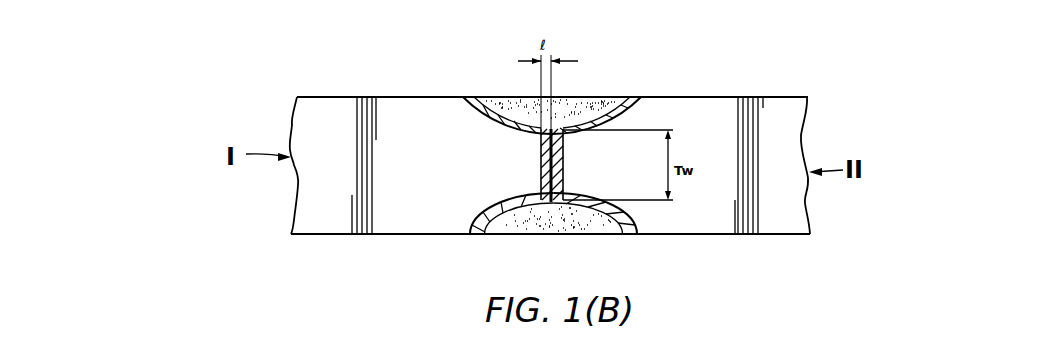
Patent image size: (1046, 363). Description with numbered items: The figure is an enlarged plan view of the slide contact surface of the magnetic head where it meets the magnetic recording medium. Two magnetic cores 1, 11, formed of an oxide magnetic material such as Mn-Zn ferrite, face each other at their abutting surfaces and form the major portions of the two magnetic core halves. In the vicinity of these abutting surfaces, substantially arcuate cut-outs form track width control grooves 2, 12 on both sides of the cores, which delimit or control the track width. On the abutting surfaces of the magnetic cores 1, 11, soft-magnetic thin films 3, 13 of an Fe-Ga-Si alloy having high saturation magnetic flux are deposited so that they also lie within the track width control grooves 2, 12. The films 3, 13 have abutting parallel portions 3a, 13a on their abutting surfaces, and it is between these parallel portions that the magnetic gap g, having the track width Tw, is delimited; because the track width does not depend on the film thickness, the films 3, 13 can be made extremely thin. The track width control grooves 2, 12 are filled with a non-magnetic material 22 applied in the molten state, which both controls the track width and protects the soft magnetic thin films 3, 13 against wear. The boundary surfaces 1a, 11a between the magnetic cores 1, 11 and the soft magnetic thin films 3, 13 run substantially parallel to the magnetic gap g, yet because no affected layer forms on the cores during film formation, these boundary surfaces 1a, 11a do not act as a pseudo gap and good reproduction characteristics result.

The magnetic core 1 is at (330, 118).
The magnetic core 11 is at (722, 118).
The soft-magnetic thin film 3 is at (473, 99).
The soft-magnetic thin film 13 is at (621, 98).
The track width control groove 2 is at (497, 233).
The track width control groove 12 is at (618, 233).
The non-magnetic material 22 is at (499, 104).
The boundary surface 1a is at (541, 148).
The boundary surface 11a is at (563, 153).
The abutting parallel portion 3a is at (541, 177).
The abutting parallel portion 13a is at (563, 178).
The magnetic gap g is at (540, 200).